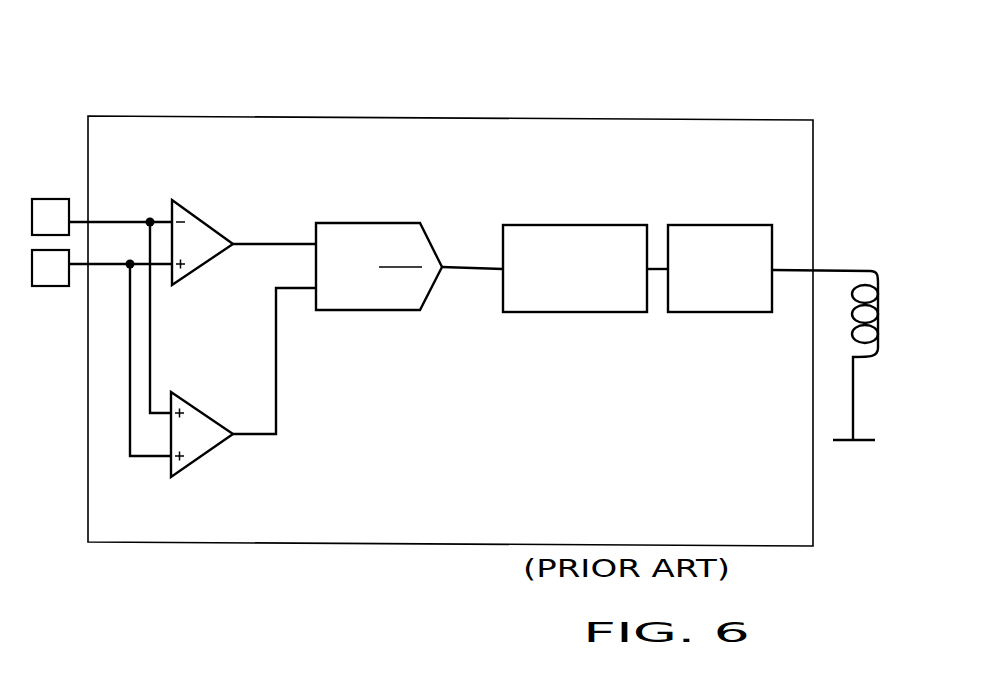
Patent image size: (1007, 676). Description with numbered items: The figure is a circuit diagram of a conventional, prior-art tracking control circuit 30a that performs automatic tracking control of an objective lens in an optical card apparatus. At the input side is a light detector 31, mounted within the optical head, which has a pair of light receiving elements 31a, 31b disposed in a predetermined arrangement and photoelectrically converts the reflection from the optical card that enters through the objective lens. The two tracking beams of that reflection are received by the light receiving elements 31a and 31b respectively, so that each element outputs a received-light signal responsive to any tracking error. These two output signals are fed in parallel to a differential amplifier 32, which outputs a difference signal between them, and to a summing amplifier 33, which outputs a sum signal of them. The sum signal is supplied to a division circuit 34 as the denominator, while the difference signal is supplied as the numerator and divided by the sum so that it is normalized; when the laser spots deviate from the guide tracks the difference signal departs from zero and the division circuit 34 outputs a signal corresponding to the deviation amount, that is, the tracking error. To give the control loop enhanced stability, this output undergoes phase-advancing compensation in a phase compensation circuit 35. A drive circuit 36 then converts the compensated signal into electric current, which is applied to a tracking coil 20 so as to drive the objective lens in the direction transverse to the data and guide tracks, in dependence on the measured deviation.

The tracking coil 20 is at (877, 283).
The tracking control circuit 30a is at (816, 182).
The light detector 31 is at (47, 199).
The light receiving element 31a is at (50, 199).
The light receiving element 31b is at (48, 287).
The differential amplifier 32 is at (192, 213).
The summing amplifier 33 is at (192, 465).
The division circuit 34 is at (370, 223).
The phase compensation circuit 35 is at (562, 225).
The drive circuit 36 is at (708, 225).